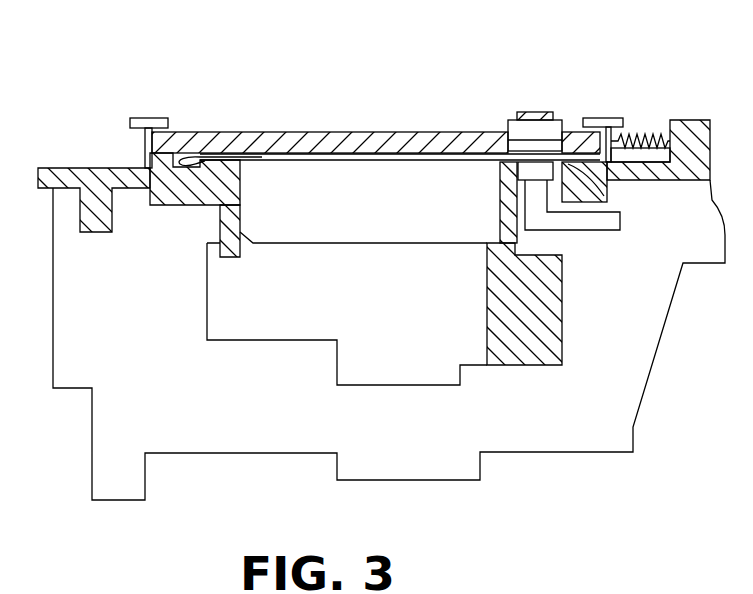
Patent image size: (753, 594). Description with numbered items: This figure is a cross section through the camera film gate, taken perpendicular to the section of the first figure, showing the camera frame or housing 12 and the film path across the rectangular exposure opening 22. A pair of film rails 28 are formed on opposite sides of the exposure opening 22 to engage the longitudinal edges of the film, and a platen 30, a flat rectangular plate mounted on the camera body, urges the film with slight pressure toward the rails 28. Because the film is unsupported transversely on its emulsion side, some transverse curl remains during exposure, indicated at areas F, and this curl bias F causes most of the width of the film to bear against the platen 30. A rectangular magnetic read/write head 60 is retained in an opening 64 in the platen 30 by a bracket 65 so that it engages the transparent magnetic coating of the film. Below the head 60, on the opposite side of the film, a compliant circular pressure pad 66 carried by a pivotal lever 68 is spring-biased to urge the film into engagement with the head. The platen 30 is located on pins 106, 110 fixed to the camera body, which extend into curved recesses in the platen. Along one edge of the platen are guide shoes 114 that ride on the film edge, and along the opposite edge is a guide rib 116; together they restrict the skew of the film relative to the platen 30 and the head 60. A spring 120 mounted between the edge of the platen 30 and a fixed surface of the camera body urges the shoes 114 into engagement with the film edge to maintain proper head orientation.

The frame or housing 12 is at (62, 178).
The rectangular exposure opening 22 is at (240, 205).
The film rails 28 is at (258, 160).
The platen 30 is at (352, 132).
The magnetic read/write head 60 is at (563, 131).
The opening 64 is at (507, 128).
The bracket 65 is at (535, 112).
The compliant circular pressure pad 66 is at (520, 172).
The pivotal lever 68 is at (597, 230).
The pin 106 is at (618, 117).
The pin 110 is at (145, 118).
The guide shoes 114 is at (597, 188).
The guide rib 116 is at (150, 185).
The spring 120 is at (642, 148).
The areas of transverse curl F is at (185, 160).